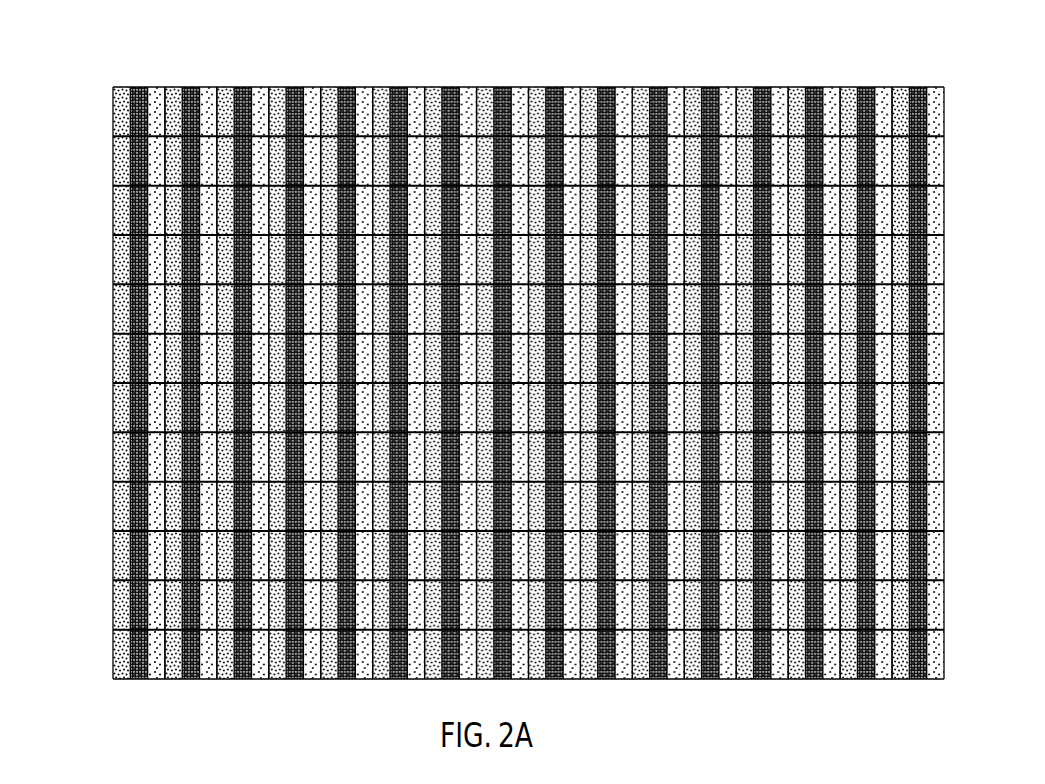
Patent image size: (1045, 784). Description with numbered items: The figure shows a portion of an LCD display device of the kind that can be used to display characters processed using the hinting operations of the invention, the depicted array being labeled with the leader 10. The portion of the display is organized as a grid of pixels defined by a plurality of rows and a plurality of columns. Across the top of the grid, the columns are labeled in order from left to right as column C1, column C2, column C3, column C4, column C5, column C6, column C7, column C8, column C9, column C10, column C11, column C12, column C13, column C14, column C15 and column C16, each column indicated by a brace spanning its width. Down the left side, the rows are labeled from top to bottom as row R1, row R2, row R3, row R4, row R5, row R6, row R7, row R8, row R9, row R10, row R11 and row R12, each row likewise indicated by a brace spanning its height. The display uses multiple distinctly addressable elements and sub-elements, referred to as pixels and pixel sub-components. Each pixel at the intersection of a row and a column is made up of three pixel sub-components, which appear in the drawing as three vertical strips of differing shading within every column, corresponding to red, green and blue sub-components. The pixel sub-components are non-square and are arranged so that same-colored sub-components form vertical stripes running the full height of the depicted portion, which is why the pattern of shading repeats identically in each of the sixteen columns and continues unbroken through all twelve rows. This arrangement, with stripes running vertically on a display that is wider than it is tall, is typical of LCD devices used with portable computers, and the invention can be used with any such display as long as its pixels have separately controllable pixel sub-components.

The memory cell array 10 is at (487, 339).
The column C1 is at (139, 356).
The column C2 is at (191, 356).
The column C3 is at (243, 356).
The column C4 is at (295, 356).
The column C5 is at (347, 356).
The column C6 is at (399, 356).
The column C7 is at (451, 356).
The column C8 is at (503, 356).
The column C9 is at (555, 356).
The column C10 is at (606, 356).
The column C11 is at (658, 356).
The column C12 is at (710, 356).
The column C13 is at (762, 356).
The column C14 is at (814, 356).
The column C15 is at (866, 356).
The column C16 is at (918, 356).
The row R1 is at (503, 111).
The row R2 is at (503, 160).
The row R3 is at (503, 210).
The row R4 is at (503, 259).
The row R5 is at (503, 308).
The row R6 is at (503, 358).
The row R7 is at (503, 407).
The row R8 is at (503, 456).
The row R9 is at (503, 506).
The row R10 is at (498, 555).
The row R11 is at (498, 604).
The row R12 is at (498, 654).